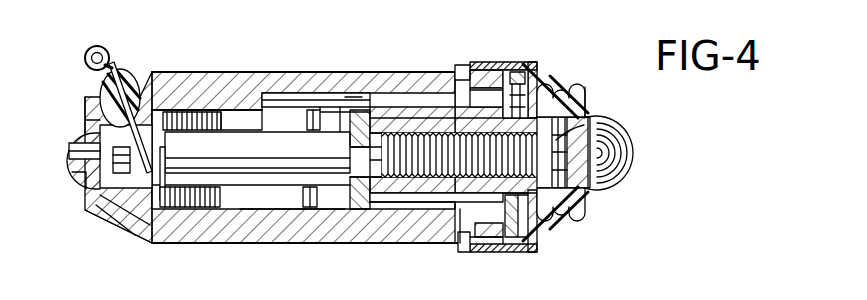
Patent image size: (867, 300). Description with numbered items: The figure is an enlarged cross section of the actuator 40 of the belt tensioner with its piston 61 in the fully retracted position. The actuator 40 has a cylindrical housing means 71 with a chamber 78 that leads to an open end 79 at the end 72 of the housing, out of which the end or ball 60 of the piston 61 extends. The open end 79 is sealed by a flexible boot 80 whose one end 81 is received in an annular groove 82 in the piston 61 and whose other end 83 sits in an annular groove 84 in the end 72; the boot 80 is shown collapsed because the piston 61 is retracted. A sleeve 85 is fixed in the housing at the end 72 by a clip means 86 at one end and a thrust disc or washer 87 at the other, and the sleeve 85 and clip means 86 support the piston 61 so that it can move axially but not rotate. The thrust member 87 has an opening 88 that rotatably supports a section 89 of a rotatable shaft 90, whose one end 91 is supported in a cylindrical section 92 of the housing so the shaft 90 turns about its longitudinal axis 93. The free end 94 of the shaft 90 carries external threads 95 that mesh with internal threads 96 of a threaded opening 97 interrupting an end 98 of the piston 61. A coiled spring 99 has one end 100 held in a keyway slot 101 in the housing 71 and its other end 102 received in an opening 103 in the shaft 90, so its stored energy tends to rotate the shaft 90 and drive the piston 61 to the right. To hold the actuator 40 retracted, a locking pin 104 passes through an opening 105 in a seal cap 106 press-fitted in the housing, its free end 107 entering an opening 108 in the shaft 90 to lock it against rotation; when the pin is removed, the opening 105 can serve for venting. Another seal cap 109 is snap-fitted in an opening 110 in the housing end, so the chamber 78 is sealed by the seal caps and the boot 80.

The actuator 40 is at (170, 252).
The ball 60 is at (600, 117).
The piston 61 is at (543, 82).
The housing means 71 is at (258, 72).
The end of the housing means 72 is at (440, 220).
The chamber 78 is at (271, 72).
The open end of the chamber 79 is at (498, 218).
The flexible boot 80 is at (485, 62).
The end of the boot 81 is at (585, 100).
The annular groove in the piston 82 is at (632, 150).
The other end of the boot 83 is at (457, 253).
The annular groove in the housing end 84 is at (452, 80).
The sleeve 85 is at (380, 208).
The clip means 86 is at (487, 230).
The thrust disc or washer 87 is at (352, 198).
The opening in the thrust member 88 is at (345, 110).
The section of the shaft 89 is at (353, 153).
The rotatable shaft 90 is at (233, 212).
The end of the shaft 91 is at (113, 220).
The cylindrical section of the housing means 92 is at (140, 232).
The longitudinal axis 93 is at (259, 195).
The free end of the shaft 94 is at (505, 133).
The external threads 95 is at (395, 133).
The internal threads 96 is at (458, 130).
The threaded opening 97 is at (410, 178).
The end of the piston 98 is at (366, 200).
The spring 99 is at (204, 110).
The end of the spring 100 is at (332, 102).
The keyway slot 101 is at (366, 100).
The other end of the spring 102 is at (151, 80).
The opening in the shaft 103 is at (174, 110).
The locking pin 104 is at (85, 48).
The opening in the seal cap 105 is at (125, 68).
The seal cap 106 is at (100, 83).
The free end of the locking pin 107 is at (90, 200).
The opening in the shaft 108 is at (108, 125).
The seal cap 109 is at (77, 148).
The opening in the end of the housing means 110 is at (80, 183).